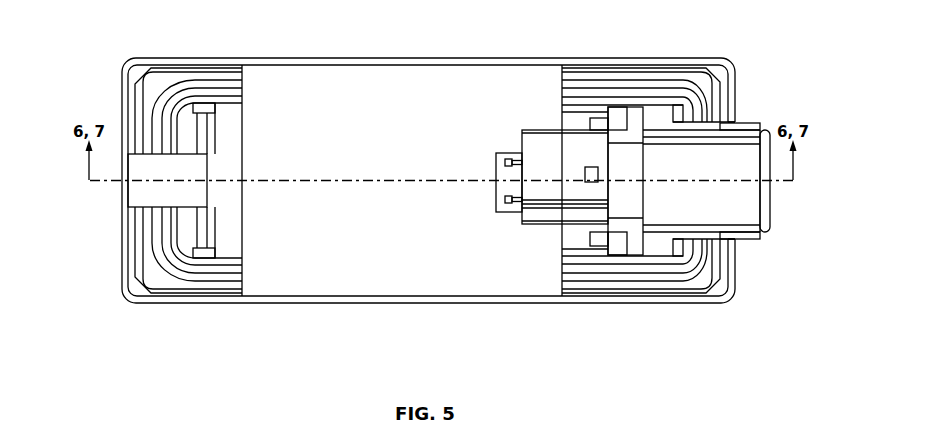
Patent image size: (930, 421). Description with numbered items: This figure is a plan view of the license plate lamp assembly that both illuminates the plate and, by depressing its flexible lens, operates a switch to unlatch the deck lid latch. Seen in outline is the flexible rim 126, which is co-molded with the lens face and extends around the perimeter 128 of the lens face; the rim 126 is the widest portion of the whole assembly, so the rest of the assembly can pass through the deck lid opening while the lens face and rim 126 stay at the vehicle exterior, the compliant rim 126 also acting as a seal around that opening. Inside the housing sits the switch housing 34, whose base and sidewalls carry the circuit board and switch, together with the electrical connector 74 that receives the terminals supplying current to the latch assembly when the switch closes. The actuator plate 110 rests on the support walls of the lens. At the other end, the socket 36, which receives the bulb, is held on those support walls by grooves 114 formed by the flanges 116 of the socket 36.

The flexible rim 126 is at (122, 268).
The perimeter of the lens face 128 is at (170, 122).
The actuator plate 110 is at (233, 111).
The switch housing 34 is at (530, 73).
The electrical connector 74 is at (569, 143).
The grooves 114 is at (638, 245).
The flanges 116 is at (600, 243).
The socket 36 is at (727, 157).